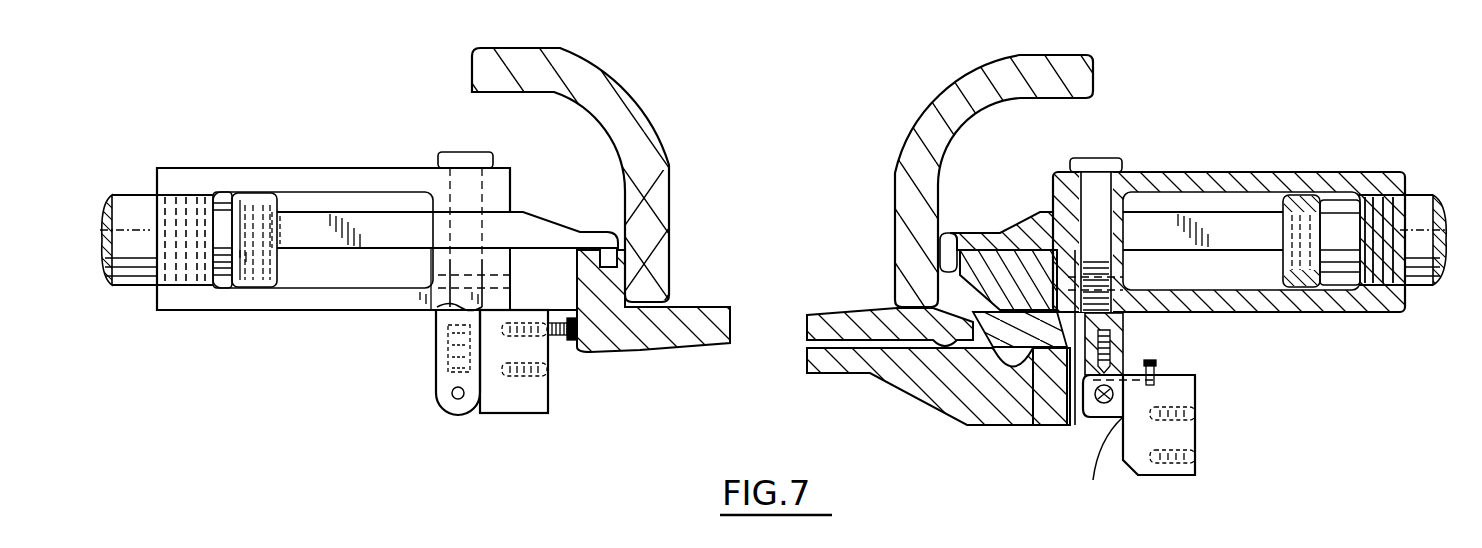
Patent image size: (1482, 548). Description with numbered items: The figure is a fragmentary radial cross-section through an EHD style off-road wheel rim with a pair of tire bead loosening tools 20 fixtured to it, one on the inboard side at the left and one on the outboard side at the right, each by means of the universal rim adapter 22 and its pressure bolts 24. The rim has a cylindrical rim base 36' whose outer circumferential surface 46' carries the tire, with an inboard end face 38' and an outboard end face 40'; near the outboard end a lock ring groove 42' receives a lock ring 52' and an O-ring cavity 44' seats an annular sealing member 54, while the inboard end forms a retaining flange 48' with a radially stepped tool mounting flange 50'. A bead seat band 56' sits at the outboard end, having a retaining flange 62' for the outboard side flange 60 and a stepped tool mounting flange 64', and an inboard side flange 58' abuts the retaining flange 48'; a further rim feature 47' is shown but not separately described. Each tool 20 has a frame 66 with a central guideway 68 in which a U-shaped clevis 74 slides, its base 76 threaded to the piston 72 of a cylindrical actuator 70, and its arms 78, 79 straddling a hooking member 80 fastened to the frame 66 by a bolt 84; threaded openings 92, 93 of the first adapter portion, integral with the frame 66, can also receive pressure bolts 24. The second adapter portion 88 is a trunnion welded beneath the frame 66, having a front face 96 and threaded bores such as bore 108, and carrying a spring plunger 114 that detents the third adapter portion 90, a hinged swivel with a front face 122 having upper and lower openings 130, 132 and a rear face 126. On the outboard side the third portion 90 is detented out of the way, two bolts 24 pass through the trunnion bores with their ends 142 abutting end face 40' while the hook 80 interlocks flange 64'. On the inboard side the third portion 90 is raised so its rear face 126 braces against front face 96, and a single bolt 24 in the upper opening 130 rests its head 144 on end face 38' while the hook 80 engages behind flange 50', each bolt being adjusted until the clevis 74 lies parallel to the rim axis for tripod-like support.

The tire bead loosening tool 20 is at (178, 347).
The universal rim adapter 22 is at (479, 426).
The pressure bolt 24 is at (552, 323).
The rim base 36' is at (765, 375).
The inboard axial end face 38' is at (634, 365).
The outboard axial end face 40' is at (1045, 448).
The lock ring groove 42' is at (975, 414).
The O-ring groove 44' is at (966, 341).
The outer circumferential surface 46' is at (730, 284).
The lower bar 47' is at (937, 386).
The retaining flange 48' is at (653, 288).
The tool mounting flange 50' is at (548, 298).
The lock ring 52' is at (1030, 406).
The annular sealing member 54 is at (945, 352).
The bead seat band 56' is at (876, 310).
The inboard side flange 58' is at (538, 165).
The outboard side flange 60 is at (1093, 60).
The retaining flange of bead seat band 62' is at (865, 279).
The tool mounting flange of bead seat band 64' is at (963, 229).
The frame 66 is at (323, 293).
The guideway 68 is at (300, 290).
The actuator 70 is at (124, 195).
The piston 72 is at (221, 205).
The clevis 74 is at (325, 205).
The clevis base 76 is at (258, 198).
The clevis arm 78 is at (1013, 233).
The clevis arm 79 is at (553, 232).
The hooking member 80 is at (669, 205).
The bolt 84 is at (462, 152).
The second adapter portion 88 is at (440, 343).
The third adapter portion 90 is at (535, 414).
The threaded opening 92 is at (1118, 287).
The threaded opening 93 is at (435, 283).
The front face of trunnion 96 is at (510, 336).
The threaded through-bore 108 is at (445, 378).
The spring plunging unit 114 is at (1115, 350).
The front face of swivel 122 is at (550, 413).
The rear face of swivel 126 is at (450, 327).
The upper threaded opening 130 is at (557, 340).
The lower threaded opening 132 is at (553, 395).
The bolt end 142 is at (1085, 412).
The bolt head 144 is at (650, 340).